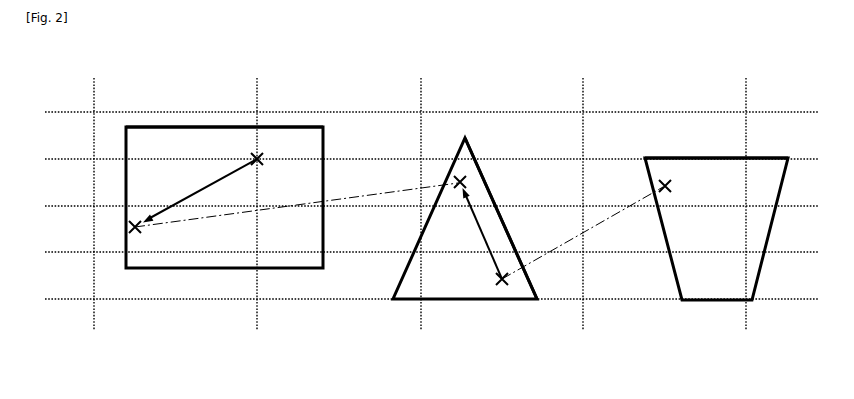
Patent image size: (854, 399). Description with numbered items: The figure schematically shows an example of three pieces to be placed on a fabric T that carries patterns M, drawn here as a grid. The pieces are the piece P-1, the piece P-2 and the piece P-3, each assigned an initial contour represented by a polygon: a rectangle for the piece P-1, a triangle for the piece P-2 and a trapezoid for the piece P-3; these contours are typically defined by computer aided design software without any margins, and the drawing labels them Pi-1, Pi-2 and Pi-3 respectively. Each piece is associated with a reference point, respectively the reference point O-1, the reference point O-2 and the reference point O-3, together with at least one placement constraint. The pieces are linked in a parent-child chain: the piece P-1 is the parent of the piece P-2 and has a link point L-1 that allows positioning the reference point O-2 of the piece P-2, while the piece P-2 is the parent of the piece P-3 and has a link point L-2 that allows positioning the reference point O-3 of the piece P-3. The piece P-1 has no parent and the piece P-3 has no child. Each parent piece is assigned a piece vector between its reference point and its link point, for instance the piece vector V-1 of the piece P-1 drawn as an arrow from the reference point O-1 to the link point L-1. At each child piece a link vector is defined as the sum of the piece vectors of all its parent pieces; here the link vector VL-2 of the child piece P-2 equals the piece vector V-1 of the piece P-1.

The patterns M is at (257, 300).
The fabric T is at (538, 104).
The piece P-1 is at (130, 284).
The plane of first polygon Pi-1 is at (164, 126).
The piece vector V-1 is at (193, 194).
The link vector VL-2 is at (200, 179).
The reference point O-1 is at (262, 164).
The link point L-1 is at (137, 220).
The piece P-2 is at (403, 316).
The plane of second polygon Pi-2 is at (474, 152).
The reference point O-2 is at (468, 184).
The link point L-2 is at (495, 280).
The piece P-3 is at (691, 316).
The plane of third polygon Pi-3 is at (695, 157).
The reference point O-3 is at (672, 186).